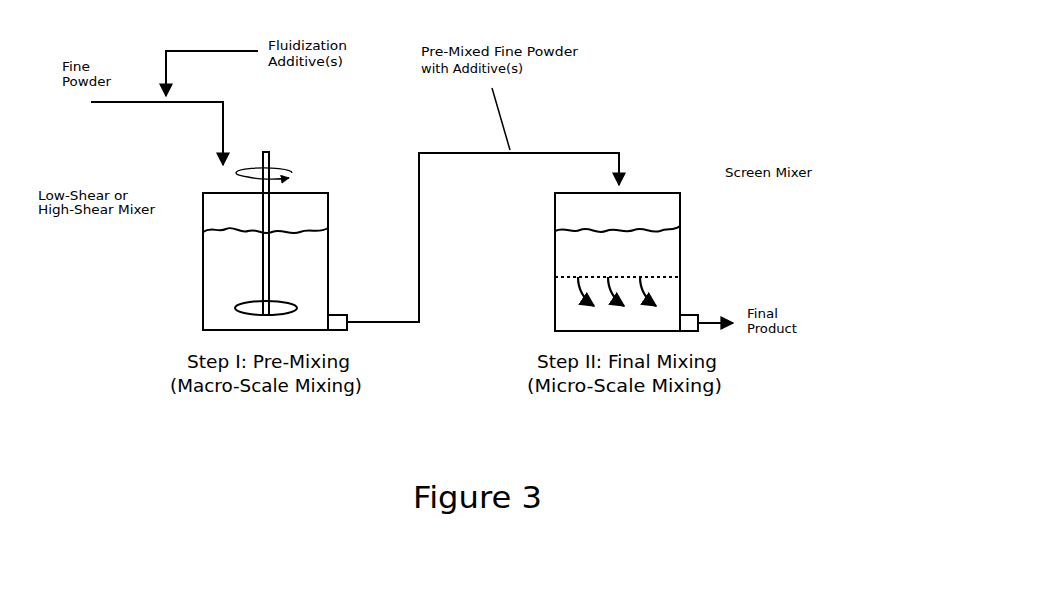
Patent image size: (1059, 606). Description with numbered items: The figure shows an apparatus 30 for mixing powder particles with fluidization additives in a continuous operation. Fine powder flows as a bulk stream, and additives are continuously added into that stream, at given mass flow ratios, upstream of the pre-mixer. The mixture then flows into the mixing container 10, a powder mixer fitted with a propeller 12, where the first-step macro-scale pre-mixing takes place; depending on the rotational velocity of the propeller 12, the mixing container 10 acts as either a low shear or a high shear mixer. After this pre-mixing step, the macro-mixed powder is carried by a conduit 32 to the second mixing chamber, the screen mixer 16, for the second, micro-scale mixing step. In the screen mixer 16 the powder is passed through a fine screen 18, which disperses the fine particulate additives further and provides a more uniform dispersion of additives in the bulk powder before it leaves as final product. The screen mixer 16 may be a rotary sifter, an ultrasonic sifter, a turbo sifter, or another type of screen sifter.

The apparatus for continuous operation 30 is at (650, 93).
The mixing container 10 is at (203, 243).
The propeller 12 is at (253, 277).
The conduit 32 is at (419, 185).
The screen mixer 16 is at (685, 198).
The fine screen 18 is at (652, 277).